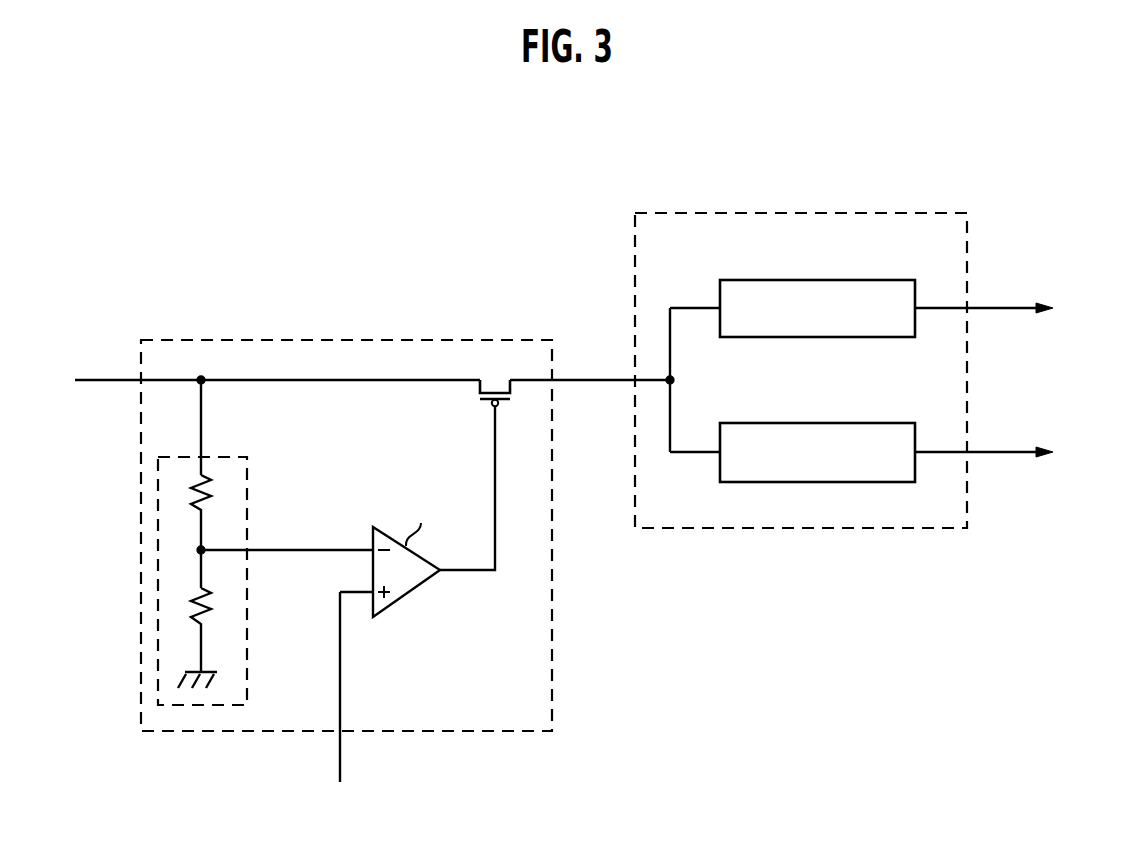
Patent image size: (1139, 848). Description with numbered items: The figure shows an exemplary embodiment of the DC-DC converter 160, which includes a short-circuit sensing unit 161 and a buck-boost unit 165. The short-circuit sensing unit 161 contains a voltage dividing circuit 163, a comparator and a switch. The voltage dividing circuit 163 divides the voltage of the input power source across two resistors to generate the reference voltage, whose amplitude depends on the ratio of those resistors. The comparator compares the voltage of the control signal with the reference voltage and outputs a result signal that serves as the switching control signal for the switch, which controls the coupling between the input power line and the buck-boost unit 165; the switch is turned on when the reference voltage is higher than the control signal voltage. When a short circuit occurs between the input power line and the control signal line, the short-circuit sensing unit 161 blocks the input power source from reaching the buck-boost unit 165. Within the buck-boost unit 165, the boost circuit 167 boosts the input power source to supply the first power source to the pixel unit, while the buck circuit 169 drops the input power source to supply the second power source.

The DC-DC converter 160 is at (1010, 166).
The short-circuit sensing unit 161 is at (344, 340).
The voltage dividing circuit 163 is at (246, 457).
The buck-boost unit 165 is at (802, 213).
The boost circuit 167 is at (889, 280).
The buck circuit 169 is at (889, 423).